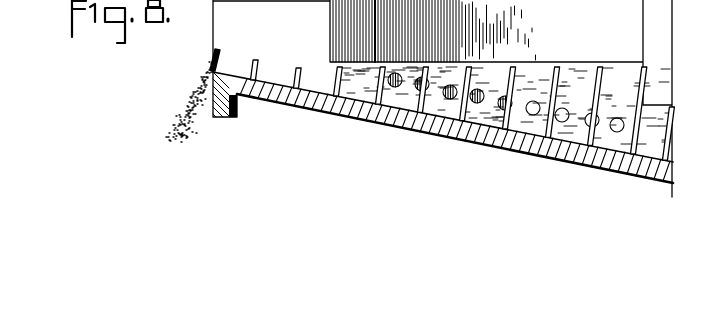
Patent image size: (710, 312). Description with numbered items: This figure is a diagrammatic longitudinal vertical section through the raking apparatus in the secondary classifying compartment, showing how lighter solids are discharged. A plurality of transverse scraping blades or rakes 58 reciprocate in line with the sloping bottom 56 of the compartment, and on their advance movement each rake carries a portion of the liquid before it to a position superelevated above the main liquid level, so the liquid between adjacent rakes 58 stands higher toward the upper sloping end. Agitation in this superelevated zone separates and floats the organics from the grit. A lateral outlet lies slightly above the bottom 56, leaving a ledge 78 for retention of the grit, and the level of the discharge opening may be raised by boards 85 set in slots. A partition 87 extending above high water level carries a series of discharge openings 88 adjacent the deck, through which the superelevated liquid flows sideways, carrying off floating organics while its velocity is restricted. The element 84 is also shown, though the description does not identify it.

The sloping bottom 56 is at (456, 139).
The scraping blades 58 is at (297, 72).
The ledge 78 is at (330, 113).
The hopper wall 84 is at (434, 31).
The boards 85 is at (378, 123).
The partition 87 is at (504, 89).
The discharge openings 88 is at (578, 108).